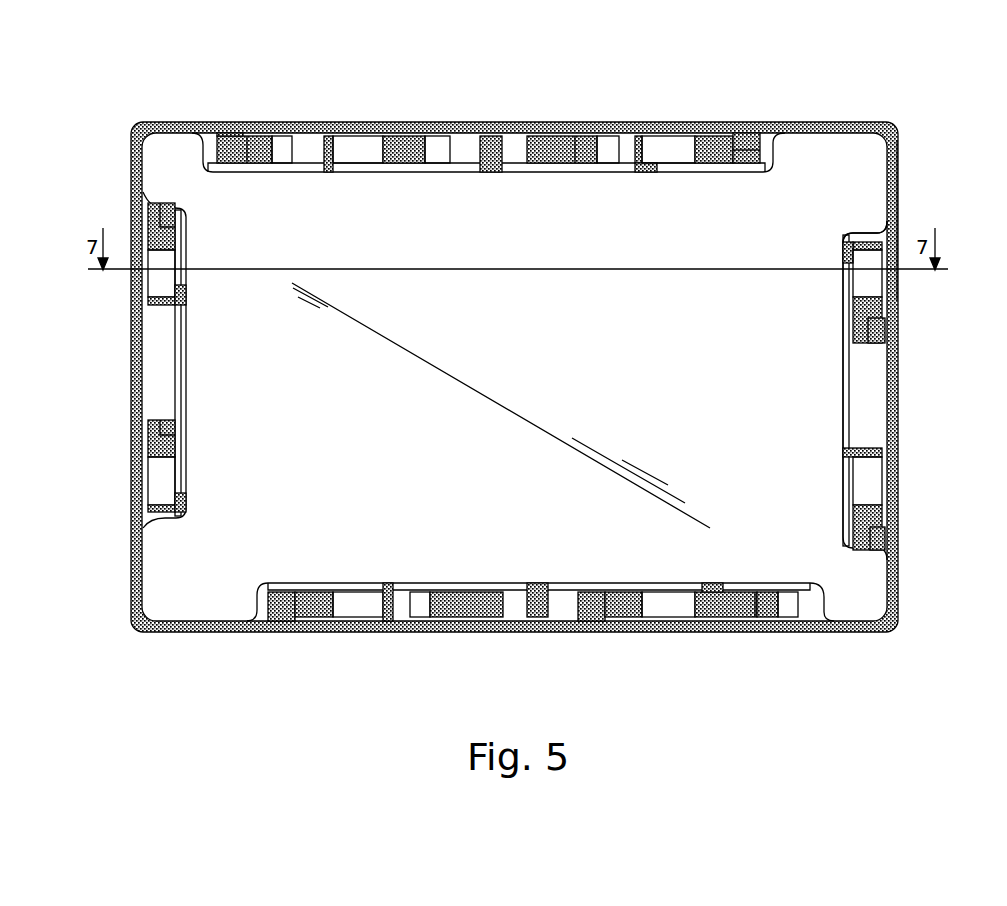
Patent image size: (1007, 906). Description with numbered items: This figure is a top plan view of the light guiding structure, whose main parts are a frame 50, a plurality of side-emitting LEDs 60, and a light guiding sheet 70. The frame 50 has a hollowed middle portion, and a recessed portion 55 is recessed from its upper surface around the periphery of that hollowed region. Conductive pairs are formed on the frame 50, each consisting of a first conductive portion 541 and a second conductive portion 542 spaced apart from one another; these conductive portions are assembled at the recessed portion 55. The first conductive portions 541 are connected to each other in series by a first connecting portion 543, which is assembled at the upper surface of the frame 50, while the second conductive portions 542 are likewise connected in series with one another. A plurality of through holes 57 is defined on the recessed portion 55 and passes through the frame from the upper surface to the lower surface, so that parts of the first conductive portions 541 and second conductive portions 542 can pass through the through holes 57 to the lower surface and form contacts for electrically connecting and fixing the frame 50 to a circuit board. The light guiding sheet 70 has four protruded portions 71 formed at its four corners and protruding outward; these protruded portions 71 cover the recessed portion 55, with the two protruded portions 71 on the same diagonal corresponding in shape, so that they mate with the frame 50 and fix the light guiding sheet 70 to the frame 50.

The frame 50 is at (131, 533).
The recessed portion 55 is at (158, 382).
The through holes 57 is at (607, 143).
The side-emitting LEDs 60 is at (665, 152).
The light guiding sheet 70 is at (308, 200).
The protruded portions 71 is at (832, 170).
The first conductive portion 541 is at (718, 140).
The second conductive portion 542 is at (639, 143).
The first connecting portion 543 is at (893, 172).